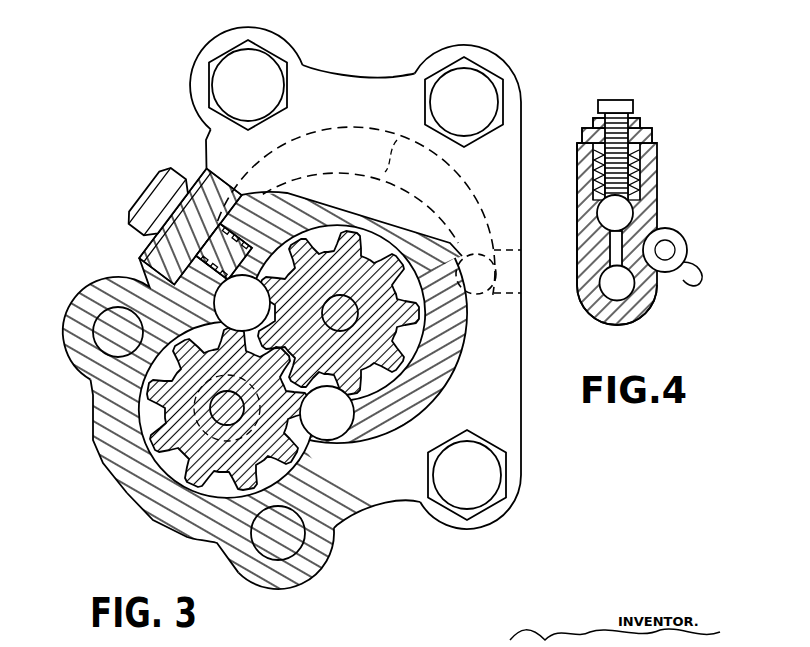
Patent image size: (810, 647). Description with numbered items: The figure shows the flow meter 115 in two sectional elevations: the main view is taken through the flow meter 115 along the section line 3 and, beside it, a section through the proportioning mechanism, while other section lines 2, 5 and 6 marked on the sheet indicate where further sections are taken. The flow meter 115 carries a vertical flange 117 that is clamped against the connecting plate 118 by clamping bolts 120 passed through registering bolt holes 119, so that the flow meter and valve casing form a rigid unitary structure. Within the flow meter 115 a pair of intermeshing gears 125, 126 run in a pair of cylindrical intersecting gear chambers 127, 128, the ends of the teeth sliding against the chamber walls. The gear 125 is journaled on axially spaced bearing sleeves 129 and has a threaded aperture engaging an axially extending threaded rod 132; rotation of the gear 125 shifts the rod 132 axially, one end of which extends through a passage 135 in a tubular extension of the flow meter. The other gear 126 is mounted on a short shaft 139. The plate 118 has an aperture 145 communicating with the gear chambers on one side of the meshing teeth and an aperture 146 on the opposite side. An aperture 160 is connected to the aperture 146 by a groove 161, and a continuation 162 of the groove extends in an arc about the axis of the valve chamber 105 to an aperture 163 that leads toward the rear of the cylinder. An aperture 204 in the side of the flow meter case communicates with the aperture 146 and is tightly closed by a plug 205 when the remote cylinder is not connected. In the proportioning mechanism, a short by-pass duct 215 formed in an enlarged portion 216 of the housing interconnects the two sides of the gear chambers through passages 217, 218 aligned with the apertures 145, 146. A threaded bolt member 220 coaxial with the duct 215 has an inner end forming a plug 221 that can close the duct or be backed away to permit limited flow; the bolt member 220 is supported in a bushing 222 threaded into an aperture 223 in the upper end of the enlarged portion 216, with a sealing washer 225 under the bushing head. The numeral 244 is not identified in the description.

In FIG. 3, the section line 2- 2 is at (352, 65).
In FIG. 3, the section line 3- 3 is at (545, 0).
In FIG. 3, the section line 5- 5 is at (470, 0).
In FIG. 3, the section line 6- 6 is at (483, 0).
In FIG. 3, the valve chamber 105 is at (427, 207).
In FIG. 3, the flow meter 115 is at (142, 440).
In FIG. 3, the vertical flange 117 is at (330, 68).
In FIG. 3, the connecting plate 118 is at (386, 426).
In FIG. 3, the bolt holes 119 is at (257, 570).
In FIG. 3, the clamping bolts 120 is at (437, 90).
In FIG. 3, the gear 125 is at (193, 500).
In FIG. 3, the gear 126 is at (427, 337).
In FIG. 3, the gear chamber 127 is at (345, 472).
In FIG. 3, the gear chamber 128 is at (425, 320).
In FIG. 3, the bearing sleeves 129 is at (93, 408).
In FIG. 3, the threaded rod 132 is at (143, 447).
In FIG. 4, the threaded rod 132 is at (670, 250).
In FIG. 4, the passage 135 is at (698, 281).
In FIG. 3, the short shaft 139 is at (442, 370).
In FIG. 3, the aperture 145 is at (327, 413).
In FIG. 3, the aperture 146 is at (242, 303).
In FIG. 3, the aperture 160 is at (284, 191).
In FIG. 3, the groove 161 is at (150, 272).
In FIG. 3, the continuation of groove 162 is at (356, 211).
In FIG. 3, the aperture 163 is at (488, 272).
In FIG. 3, the aperture 204 is at (138, 250).
In FIG. 3, the plug 205 is at (155, 212).
In FIG. 4, the by-pass duct 215 is at (600, 283).
In FIG. 4, the enlarged portion of flow meter housing 216 is at (650, 198).
In FIG. 4, the passage 217 is at (598, 310).
In FIG. 4, the passage 218 is at (598, 218).
In FIG. 4, the threaded bolt member 220 is at (630, 110).
In FIG. 4, the plug 221 is at (588, 243).
In FIG. 4, the bushing 222 is at (642, 155).
In FIG. 4, the aperture 223 is at (577, 168).
In FIG. 4, the sealing washer 225 is at (652, 132).
In FIG. 4, the spring 244 is at (652, 178).